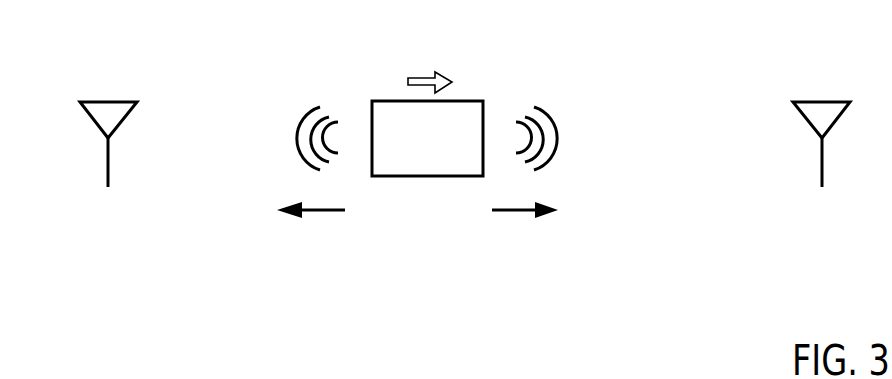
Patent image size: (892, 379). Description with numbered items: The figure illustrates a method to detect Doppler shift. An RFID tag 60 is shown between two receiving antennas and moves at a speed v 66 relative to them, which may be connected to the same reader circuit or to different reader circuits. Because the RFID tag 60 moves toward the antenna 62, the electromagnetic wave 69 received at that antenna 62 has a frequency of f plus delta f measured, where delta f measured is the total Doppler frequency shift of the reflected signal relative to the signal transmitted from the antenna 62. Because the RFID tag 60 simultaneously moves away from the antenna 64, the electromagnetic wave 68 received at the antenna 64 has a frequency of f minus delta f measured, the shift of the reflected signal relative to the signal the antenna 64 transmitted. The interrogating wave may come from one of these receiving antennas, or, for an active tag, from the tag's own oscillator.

The RFID tag 60 is at (418, 163).
The antenna 62 is at (808, 121).
The antenna 64 is at (97, 121).
The speed v 66 is at (413, 76).
The electromagnetic wave 68 is at (300, 112).
The electromagnetic wave 69 is at (553, 120).